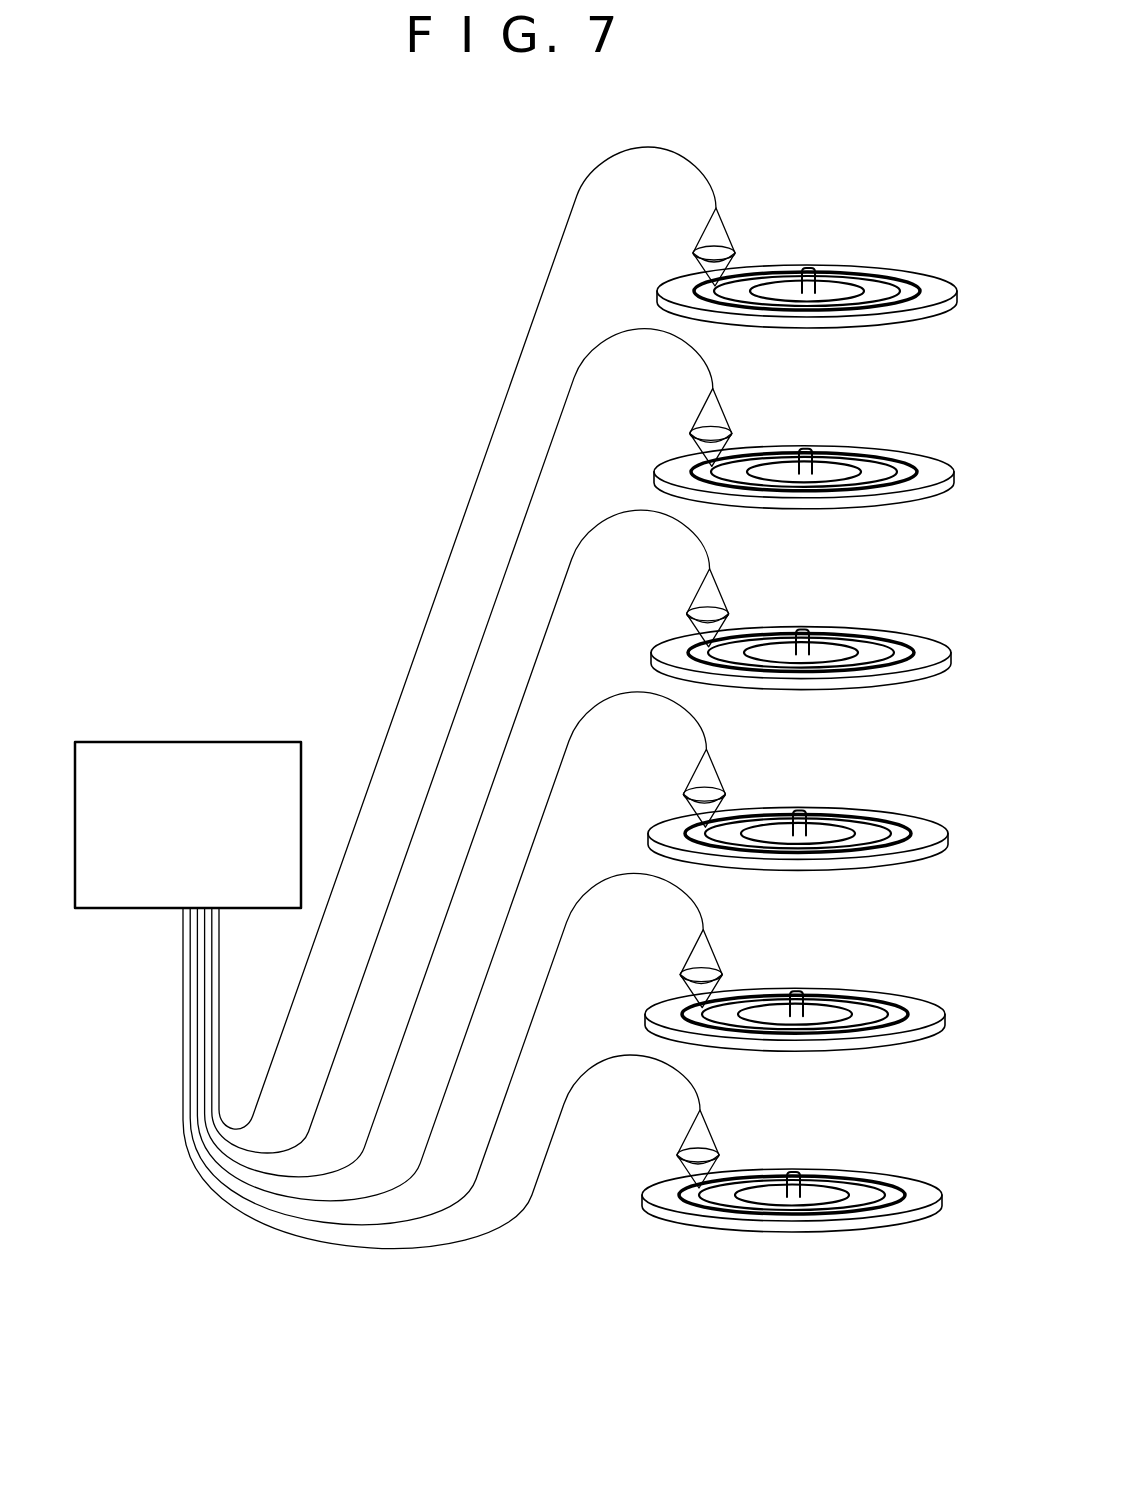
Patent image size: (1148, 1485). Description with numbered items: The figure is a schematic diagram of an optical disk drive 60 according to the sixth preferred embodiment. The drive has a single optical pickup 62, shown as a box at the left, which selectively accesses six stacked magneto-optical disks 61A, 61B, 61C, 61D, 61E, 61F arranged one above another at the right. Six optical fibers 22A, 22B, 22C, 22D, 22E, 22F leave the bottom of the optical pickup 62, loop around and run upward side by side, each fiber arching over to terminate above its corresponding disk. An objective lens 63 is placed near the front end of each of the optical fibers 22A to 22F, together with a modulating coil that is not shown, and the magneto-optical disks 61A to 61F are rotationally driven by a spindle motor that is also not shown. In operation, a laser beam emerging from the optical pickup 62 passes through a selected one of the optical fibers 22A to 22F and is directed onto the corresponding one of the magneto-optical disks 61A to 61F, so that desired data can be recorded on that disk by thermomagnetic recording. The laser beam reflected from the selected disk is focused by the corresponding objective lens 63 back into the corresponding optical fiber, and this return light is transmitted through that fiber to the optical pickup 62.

The optical disk drive 60 is at (232, 274).
The optical pickup 62 is at (192, 742).
The optical fiber 22A is at (410, 667).
The optical fiber 22B is at (426, 797).
The optical fiber 22C is at (436, 945).
The optical fiber 22D is at (367, 1197).
The optical fiber 22E is at (453, 1200).
The optical fiber 22F is at (530, 1196).
The objective lens 63 is at (697, 250).
The magneto-optical disk 61A is at (872, 288).
The magneto-optical disk 61B is at (862, 469).
The magneto-optical disk 61C is at (866, 650).
The magneto-optical disk 61D is at (861, 831).
The magneto-optical disk 61E is at (858, 1012).
The magneto-optical disk 61F is at (857, 1193).